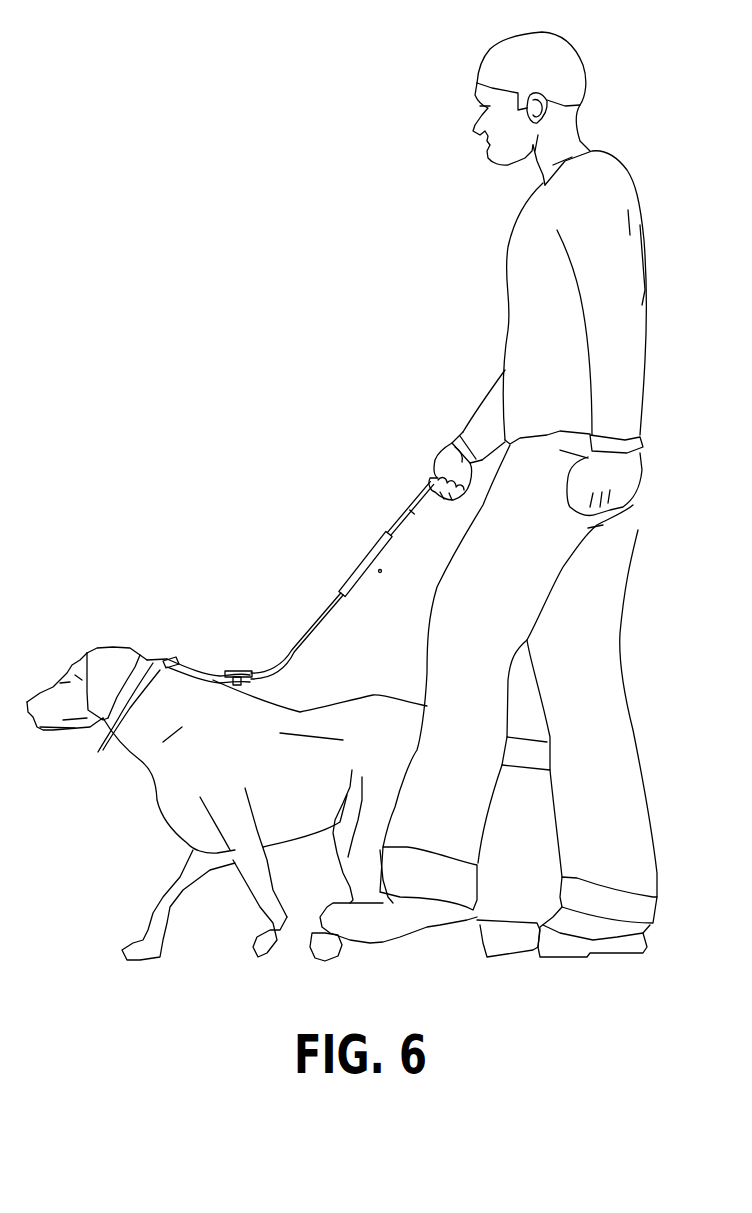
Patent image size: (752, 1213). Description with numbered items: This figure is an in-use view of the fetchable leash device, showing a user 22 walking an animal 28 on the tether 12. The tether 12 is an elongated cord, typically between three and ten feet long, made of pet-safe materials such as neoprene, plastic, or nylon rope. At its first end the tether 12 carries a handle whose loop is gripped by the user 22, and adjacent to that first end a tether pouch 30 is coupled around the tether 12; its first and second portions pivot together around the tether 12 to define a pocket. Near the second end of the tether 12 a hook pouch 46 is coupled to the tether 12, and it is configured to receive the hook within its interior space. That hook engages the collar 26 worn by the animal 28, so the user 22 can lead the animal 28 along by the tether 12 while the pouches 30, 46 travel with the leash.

The user 22 is at (588, 182).
The tether 12 is at (332, 600).
The tether pouch 30 is at (367, 548).
The hook pouch 46 is at (238, 671).
The animal 28 is at (118, 665).
The collar 26 is at (115, 735).